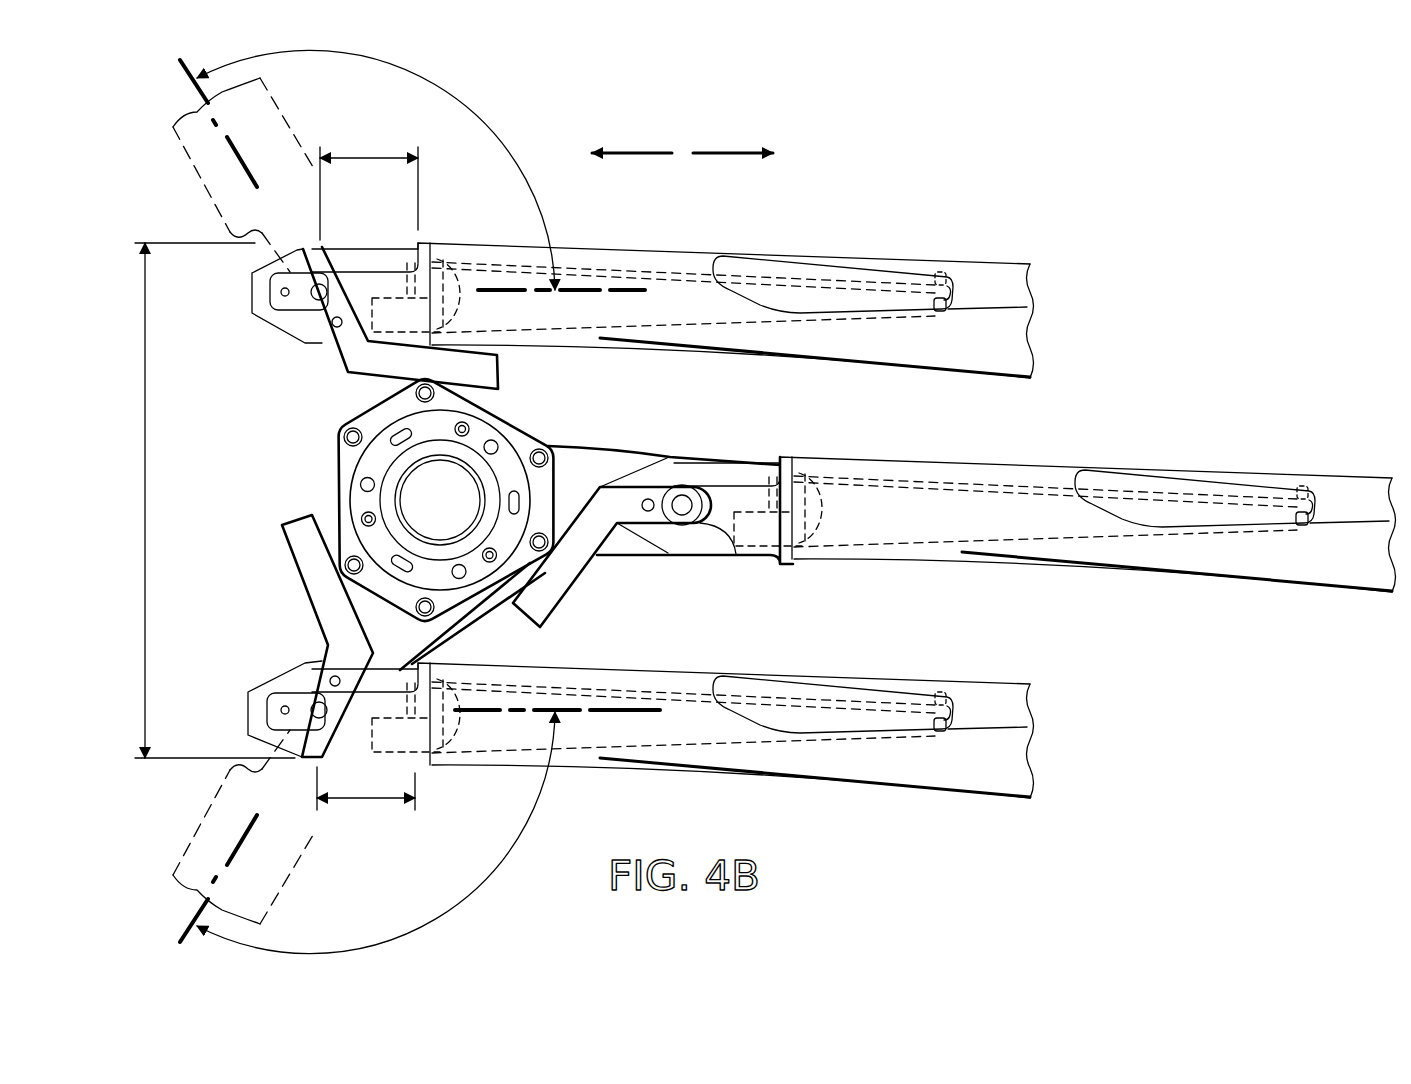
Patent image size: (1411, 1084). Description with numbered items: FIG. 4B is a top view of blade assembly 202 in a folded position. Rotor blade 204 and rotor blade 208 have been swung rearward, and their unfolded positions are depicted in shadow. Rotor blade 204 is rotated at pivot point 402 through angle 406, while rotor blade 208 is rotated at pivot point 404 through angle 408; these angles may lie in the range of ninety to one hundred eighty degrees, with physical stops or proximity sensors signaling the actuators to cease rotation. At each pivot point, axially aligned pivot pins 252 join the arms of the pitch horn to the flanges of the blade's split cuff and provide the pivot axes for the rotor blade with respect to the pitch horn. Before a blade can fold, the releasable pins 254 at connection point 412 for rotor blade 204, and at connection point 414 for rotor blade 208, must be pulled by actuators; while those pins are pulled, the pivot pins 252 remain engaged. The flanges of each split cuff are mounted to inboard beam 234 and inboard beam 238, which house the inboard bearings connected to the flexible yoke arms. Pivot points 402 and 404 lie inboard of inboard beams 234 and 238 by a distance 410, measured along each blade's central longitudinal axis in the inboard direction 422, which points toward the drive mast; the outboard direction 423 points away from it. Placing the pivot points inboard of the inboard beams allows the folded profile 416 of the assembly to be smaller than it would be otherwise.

The blade assembly 202 is at (1238, 170).
The rotor blade 204 is at (182, 150).
The rotor blade 208 is at (180, 852).
The inboard beam 234 is at (452, 285).
The inboard beam 238 is at (456, 768).
The axially aligned pivot pins 252 is at (316, 285).
The releasable pins 254 is at (335, 327).
The pivot point 402 is at (300, 300).
The pivot point 404 is at (297, 690).
The angle 406 is at (462, 95).
The angle 408 is at (463, 906).
The distance 410 is at (368, 157).
The connection point 412 is at (281, 292).
The connection point 414 is at (281, 710).
The folded profile 416 is at (143, 498).
The inboard direction 422 is at (638, 150).
The outboard direction 423 is at (724, 150).